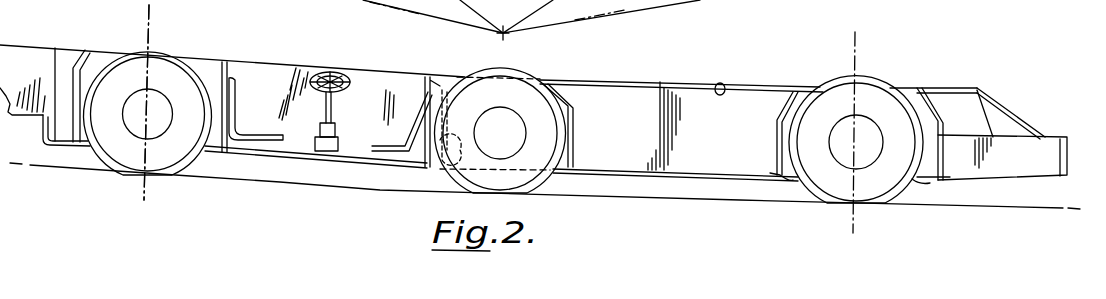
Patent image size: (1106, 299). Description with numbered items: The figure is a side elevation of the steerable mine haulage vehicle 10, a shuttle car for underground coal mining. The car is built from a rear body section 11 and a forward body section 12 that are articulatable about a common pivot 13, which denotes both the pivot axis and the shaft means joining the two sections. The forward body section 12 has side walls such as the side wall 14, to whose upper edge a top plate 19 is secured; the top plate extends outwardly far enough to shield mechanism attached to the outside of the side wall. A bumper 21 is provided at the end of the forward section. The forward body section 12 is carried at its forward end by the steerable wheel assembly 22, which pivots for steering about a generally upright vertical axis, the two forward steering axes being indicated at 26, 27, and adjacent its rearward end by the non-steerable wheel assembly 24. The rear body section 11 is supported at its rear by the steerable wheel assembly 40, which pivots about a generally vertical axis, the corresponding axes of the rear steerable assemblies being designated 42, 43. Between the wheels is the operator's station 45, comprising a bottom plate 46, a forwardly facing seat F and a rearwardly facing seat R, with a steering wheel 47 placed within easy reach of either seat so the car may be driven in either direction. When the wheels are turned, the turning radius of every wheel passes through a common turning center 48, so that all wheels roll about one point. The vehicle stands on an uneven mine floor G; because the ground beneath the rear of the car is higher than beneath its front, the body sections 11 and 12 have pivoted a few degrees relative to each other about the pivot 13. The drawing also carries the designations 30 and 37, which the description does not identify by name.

The steerable mine haulage vehicle 10 is at (690, 60).
The rear body section 11 is at (253, 59).
The forward body section 12 is at (660, 80).
The common pivot 13 is at (433, 164).
The side wall 14 is at (728, 148).
The top plate 19 is at (723, 83).
The bumper 21 is at (1045, 143).
The steerable wheel assembly 22 is at (888, 78).
The non-steerable wheel assembly 24 is at (531, 67).
The upright vertical axis 26 is at (860, 42).
The upright vertical axis 27 is at (887, 92).
The compartment 30 is at (303, 67).
The front bracket 37 is at (62, 55).
The steerable wheel assembly 40 is at (128, 53).
The vertical axis 42 is at (152, 30).
The vertical axis 43 is at (189, 102).
The operator's station 45 is at (333, 164).
The bottom plate 46 is at (290, 155).
The steering wheel 47 is at (346, 68).
The common turning center 48 is at (500, 35).
The forwardly facing seat F is at (233, 105).
The rearwardly facing seat R is at (385, 140).
The mine floor G is at (648, 191).